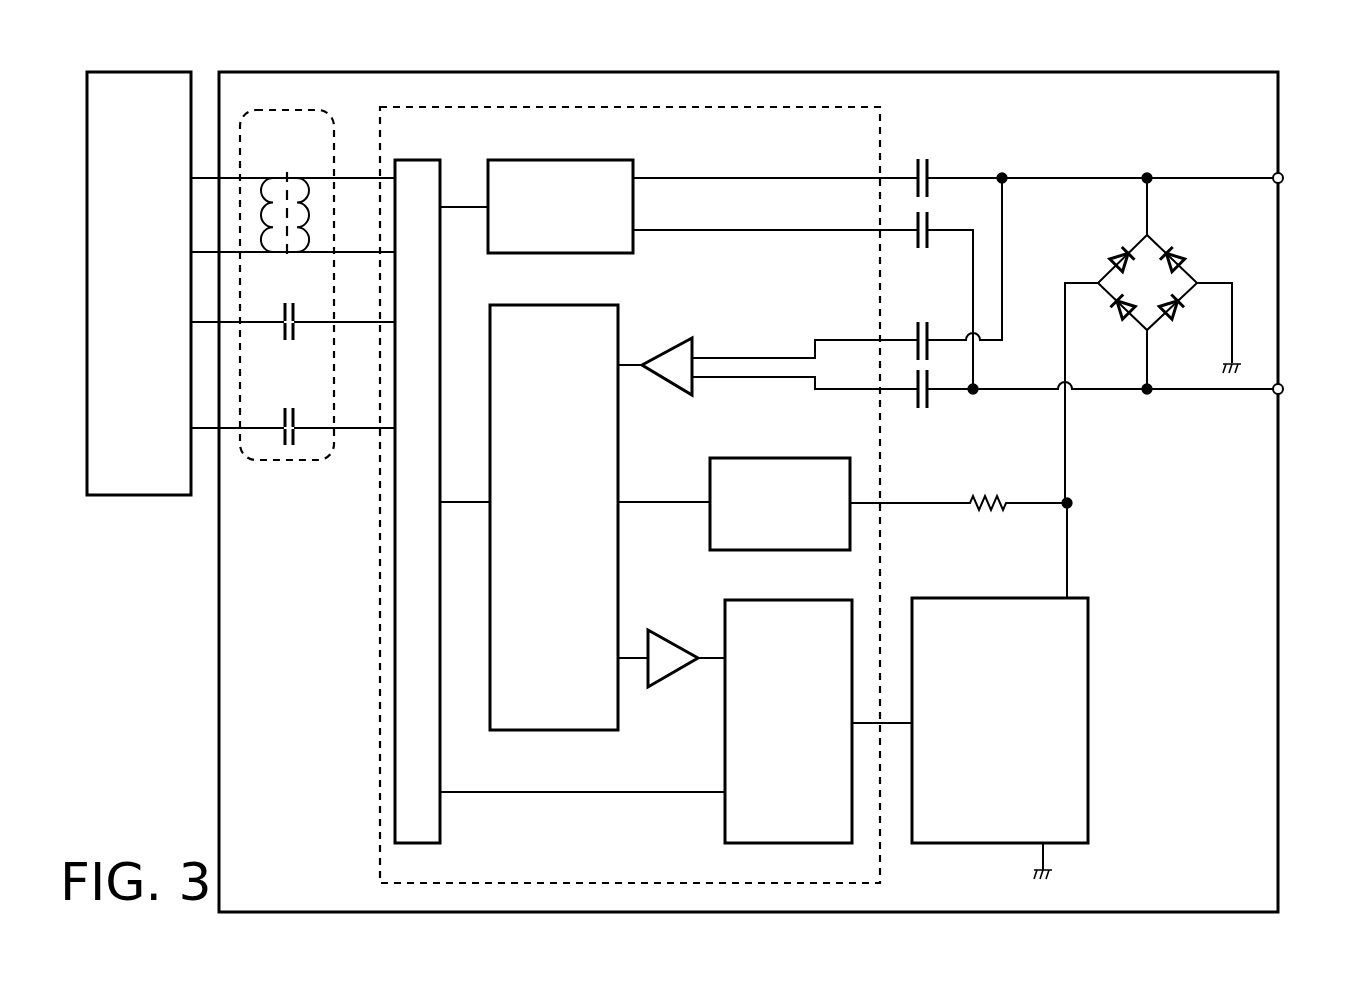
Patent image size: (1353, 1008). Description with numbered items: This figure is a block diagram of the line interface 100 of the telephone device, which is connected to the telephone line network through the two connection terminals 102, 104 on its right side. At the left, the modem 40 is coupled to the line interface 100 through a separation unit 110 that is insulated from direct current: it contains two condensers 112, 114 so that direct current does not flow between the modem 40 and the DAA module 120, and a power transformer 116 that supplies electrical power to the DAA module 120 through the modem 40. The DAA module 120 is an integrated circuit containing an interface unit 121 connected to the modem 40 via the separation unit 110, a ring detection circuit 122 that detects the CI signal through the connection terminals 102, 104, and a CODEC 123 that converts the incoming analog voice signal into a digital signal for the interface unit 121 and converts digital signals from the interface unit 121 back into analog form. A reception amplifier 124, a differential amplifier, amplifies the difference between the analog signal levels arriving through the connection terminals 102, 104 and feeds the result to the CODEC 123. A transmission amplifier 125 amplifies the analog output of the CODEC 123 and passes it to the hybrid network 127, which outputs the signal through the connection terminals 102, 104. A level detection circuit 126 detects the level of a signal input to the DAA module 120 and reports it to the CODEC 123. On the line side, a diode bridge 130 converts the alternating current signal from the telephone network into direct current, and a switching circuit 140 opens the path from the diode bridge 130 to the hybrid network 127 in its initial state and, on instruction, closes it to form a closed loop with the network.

The modem 40 is at (134, 72).
The line interface 100 is at (1052, 72).
The connection terminal 102 is at (1284, 180).
The connection terminal 104 is at (1284, 391).
The separation unit 110 is at (268, 462).
The condenser 112 is at (293, 313).
The condenser 114 is at (293, 418).
The power transformer 116 is at (288, 172).
The DAA module 120 is at (883, 112).
The interface unit 121 is at (441, 280).
The ring detection circuit 122 is at (568, 160).
The CODEC 123 is at (618, 442).
The reception amplifier 124 is at (680, 338).
The transmission amplifier 125 is at (689, 612).
The level detection circuit 126 is at (773, 458).
The hybrid network 127 is at (723, 755).
The diode bridge 130 is at (1185, 244).
The switching circuit 140 is at (1089, 680).